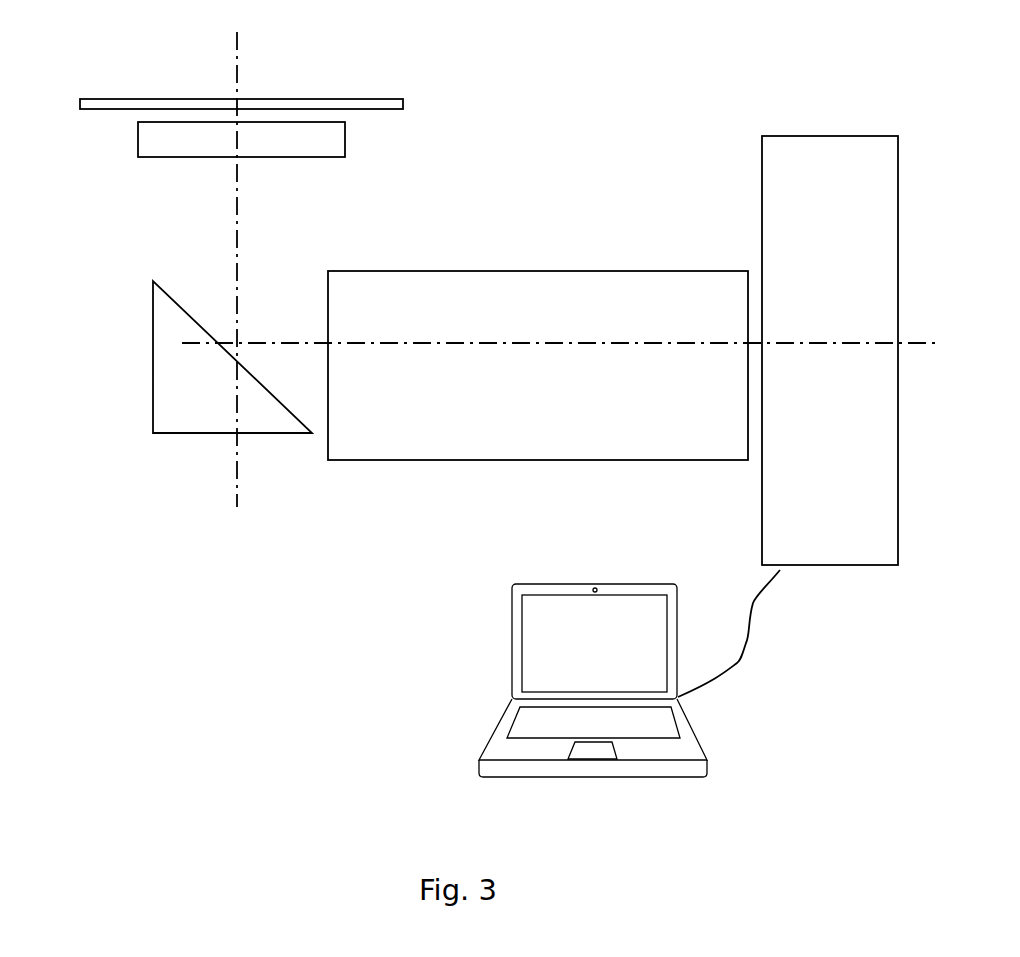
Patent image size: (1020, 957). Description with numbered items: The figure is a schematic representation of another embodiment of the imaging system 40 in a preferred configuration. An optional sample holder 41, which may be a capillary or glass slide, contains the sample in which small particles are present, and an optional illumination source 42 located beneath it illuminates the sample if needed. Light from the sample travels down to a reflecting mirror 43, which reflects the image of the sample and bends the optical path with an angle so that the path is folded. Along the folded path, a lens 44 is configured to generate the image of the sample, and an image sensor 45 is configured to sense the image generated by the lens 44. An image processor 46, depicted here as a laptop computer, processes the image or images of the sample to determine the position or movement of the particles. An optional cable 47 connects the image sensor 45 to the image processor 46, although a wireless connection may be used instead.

The imaging system 40 is at (478, 269).
The sample holder 41 is at (80, 104).
The illumination source 42 is at (339, 169).
The reflecting mirror 43 is at (168, 447).
The lens 44 is at (403, 465).
The image sensor 45 is at (762, 179).
The image processor 46 is at (510, 783).
The cable 47 is at (738, 680).